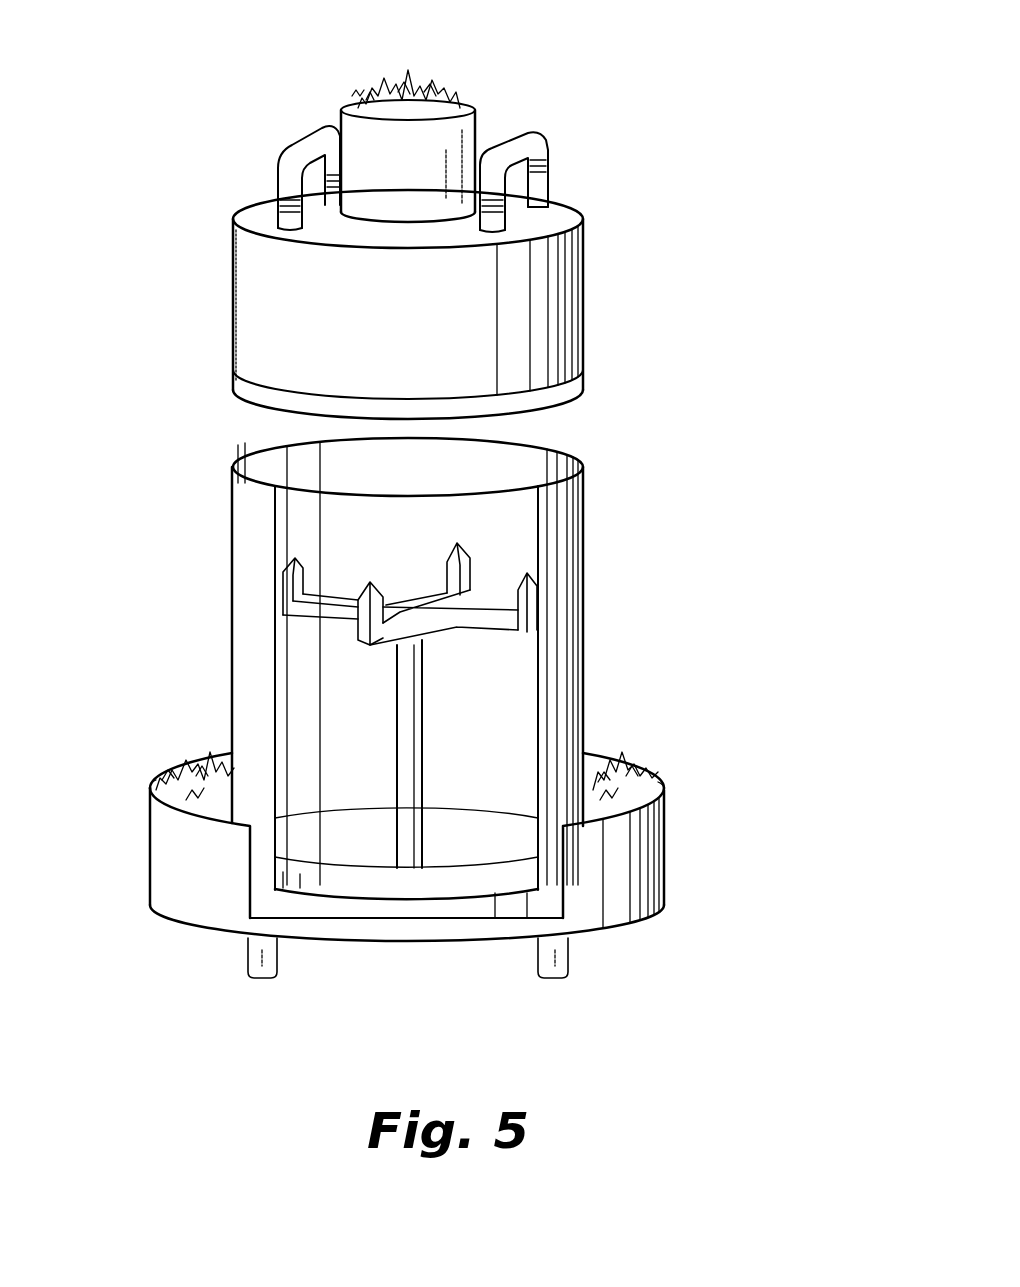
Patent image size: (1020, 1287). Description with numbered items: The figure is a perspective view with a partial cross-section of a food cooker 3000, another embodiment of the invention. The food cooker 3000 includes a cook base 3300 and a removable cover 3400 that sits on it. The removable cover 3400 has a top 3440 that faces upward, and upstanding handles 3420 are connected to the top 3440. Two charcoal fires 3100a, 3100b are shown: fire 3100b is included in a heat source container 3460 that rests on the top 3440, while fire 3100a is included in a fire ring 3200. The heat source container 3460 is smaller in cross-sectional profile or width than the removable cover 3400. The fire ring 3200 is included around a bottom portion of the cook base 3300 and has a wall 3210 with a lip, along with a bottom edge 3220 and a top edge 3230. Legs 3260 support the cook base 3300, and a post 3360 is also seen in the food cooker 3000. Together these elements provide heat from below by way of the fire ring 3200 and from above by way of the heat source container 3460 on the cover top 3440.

The food cooker 3000 is at (778, 244).
The charcoal fire 3100a is at (204, 766).
The charcoal fire 3100b is at (423, 80).
The fire ring 3200 is at (691, 814).
The wall 3210 is at (650, 858).
The bottom edge 3220 is at (608, 928).
The top edge 3230 is at (628, 814).
The legs 3260 is at (270, 960).
The cook base 3300 is at (652, 610).
The post 3360 is at (424, 724).
The removable cover 3400 is at (598, 312).
The handles 3420 is at (300, 162).
The top 3440 is at (550, 222).
The heat source container 3460 is at (423, 186).